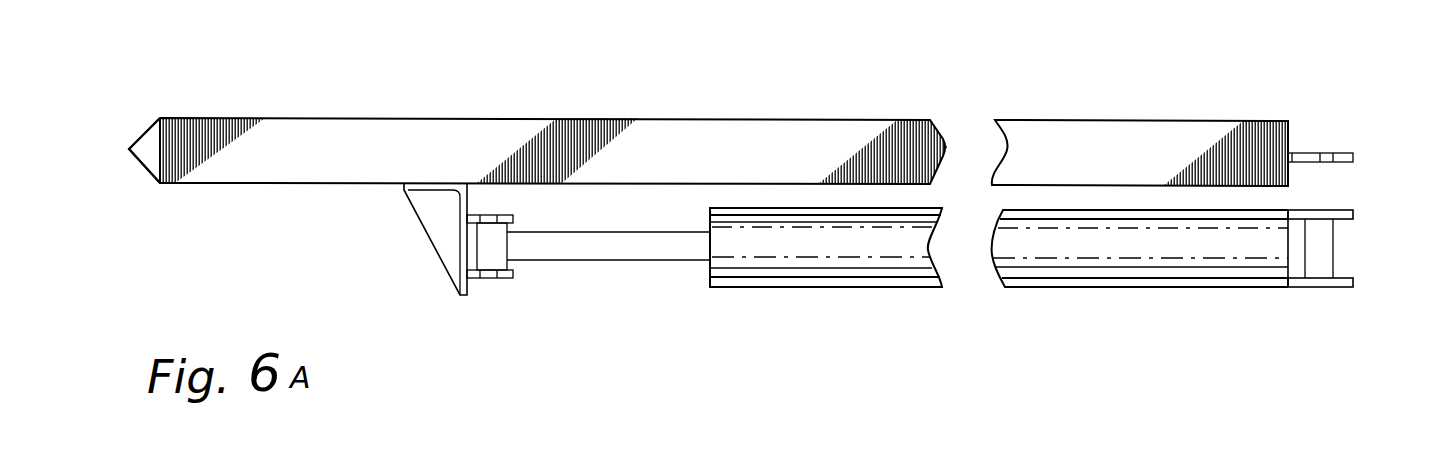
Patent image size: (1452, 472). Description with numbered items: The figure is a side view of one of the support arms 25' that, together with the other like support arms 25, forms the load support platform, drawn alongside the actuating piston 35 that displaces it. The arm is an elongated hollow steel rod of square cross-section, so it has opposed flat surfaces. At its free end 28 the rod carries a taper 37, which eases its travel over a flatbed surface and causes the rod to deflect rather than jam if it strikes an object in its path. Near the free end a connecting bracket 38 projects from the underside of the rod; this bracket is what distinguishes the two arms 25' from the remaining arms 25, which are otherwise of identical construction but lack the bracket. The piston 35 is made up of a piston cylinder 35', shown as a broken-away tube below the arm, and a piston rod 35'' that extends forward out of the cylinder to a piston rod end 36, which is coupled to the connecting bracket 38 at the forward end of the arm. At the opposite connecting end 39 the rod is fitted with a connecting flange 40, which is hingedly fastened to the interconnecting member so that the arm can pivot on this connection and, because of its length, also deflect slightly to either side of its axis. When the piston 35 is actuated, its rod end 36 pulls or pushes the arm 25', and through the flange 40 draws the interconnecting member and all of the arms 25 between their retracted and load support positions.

The support arm 25 is at (1140, 114).
The support arm with connecting bracket 25' is at (538, 112).
The free end 28 is at (215, 118).
The actuating piston 35 is at (1172, 278).
The piston cylinder 35' is at (826, 288).
The piston rod 35'' is at (514, 291).
The piston rod end 36 is at (634, 245).
The taper 37 is at (145, 132).
The connecting bracket 38 is at (434, 222).
The connecting end 39 is at (1290, 137).
The connecting flange 40 is at (1303, 163).